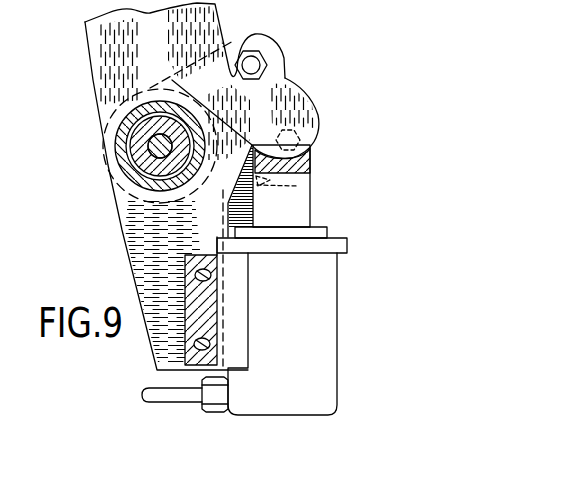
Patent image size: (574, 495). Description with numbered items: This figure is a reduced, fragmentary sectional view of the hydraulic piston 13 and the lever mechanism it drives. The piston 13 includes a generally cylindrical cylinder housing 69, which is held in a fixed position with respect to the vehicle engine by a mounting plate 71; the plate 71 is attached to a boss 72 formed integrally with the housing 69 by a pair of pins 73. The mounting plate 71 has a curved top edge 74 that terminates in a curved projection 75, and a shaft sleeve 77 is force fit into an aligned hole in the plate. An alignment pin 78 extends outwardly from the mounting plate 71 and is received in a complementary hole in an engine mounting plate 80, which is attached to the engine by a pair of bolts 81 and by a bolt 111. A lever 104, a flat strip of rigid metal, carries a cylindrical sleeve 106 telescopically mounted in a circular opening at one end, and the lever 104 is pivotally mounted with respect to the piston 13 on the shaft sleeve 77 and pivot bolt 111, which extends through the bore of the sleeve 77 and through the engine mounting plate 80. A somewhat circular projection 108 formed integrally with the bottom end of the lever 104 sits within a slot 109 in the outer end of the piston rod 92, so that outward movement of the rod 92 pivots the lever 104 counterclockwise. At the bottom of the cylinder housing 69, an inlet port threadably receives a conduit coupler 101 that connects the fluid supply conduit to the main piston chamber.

The lever 104 is at (108, 33).
The engine mounting plate 80 is at (272, 54).
The bolts 81 is at (253, 58).
The circular projection 108 is at (297, 87).
The slot 109 is at (306, 152).
The curved top edges 74 is at (118, 100).
The cylindrical sleeve 106 is at (128, 134).
The shaft sleeve 77 is at (170, 144).
The bolt 111 is at (148, 153).
The alignment pin 78 is at (220, 185).
The piston rod 92 is at (298, 210).
The curved projection 75 is at (262, 180).
The mounting plate 71 is at (130, 235).
The boss 72 is at (205, 326).
The pins 73 is at (195, 275).
The hydraulic piston 13 is at (343, 320).
The cylinder housing 69 is at (338, 367).
The conduit coupler 101 is at (210, 397).